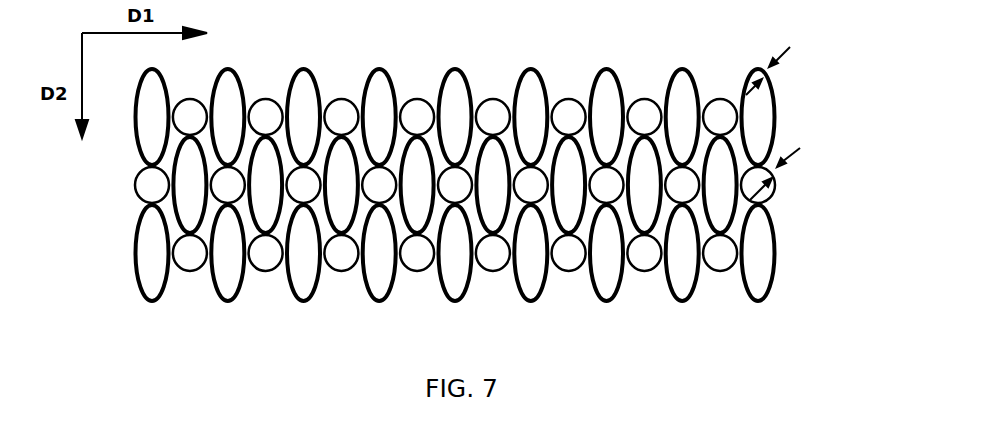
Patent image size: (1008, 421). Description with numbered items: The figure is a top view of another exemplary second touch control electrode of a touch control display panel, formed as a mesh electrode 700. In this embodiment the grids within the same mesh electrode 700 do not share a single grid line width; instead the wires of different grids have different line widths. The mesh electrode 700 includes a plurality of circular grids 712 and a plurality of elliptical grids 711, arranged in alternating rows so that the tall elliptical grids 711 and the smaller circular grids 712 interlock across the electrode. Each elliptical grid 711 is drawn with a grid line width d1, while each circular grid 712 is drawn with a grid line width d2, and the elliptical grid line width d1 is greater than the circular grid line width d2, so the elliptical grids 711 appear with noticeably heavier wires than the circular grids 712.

The mesh electrode 700 is at (600, 50).
The elliptical grid 711 is at (760, 102).
The circular grid 712 is at (774, 178).
The grid line width of the elliptical grid d1 is at (769, 64).
The grid line width of the circular grid d2 is at (775, 166).